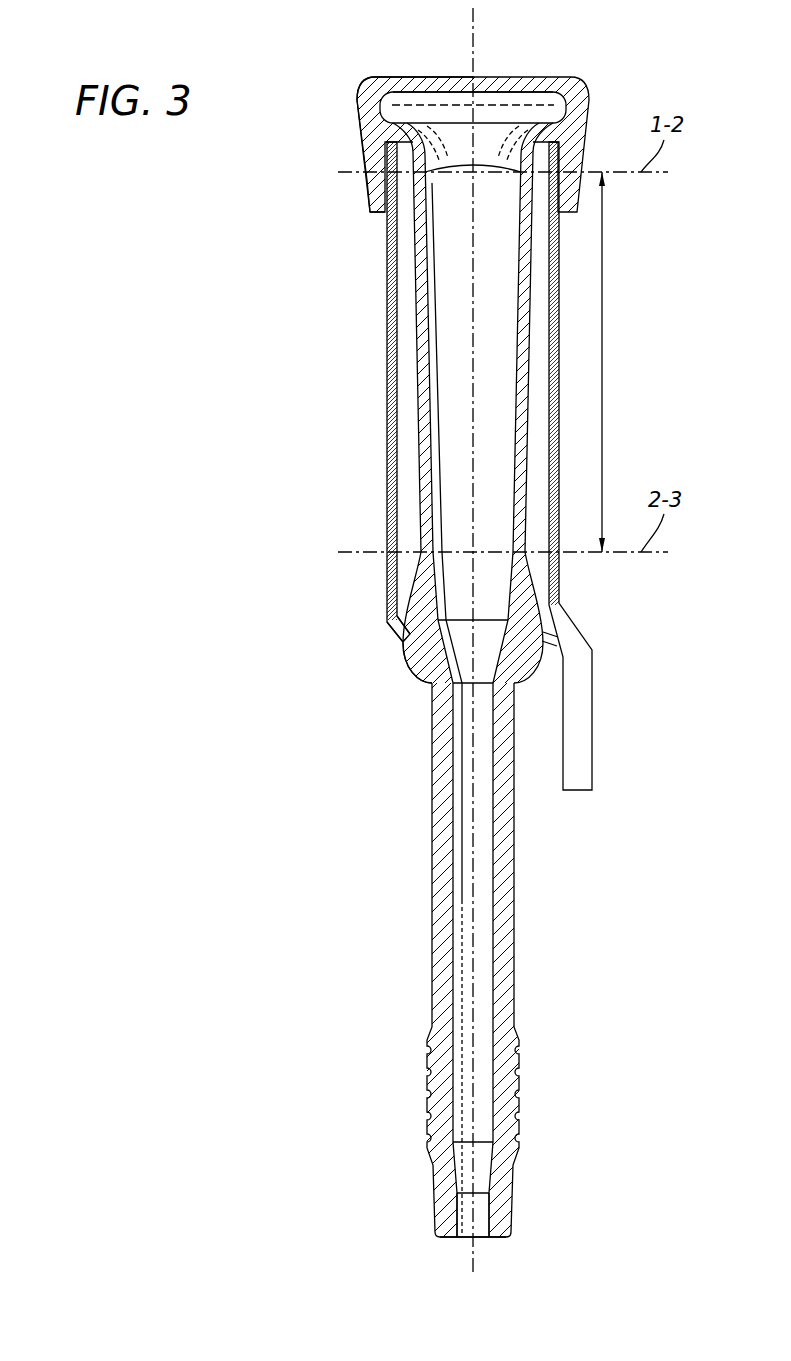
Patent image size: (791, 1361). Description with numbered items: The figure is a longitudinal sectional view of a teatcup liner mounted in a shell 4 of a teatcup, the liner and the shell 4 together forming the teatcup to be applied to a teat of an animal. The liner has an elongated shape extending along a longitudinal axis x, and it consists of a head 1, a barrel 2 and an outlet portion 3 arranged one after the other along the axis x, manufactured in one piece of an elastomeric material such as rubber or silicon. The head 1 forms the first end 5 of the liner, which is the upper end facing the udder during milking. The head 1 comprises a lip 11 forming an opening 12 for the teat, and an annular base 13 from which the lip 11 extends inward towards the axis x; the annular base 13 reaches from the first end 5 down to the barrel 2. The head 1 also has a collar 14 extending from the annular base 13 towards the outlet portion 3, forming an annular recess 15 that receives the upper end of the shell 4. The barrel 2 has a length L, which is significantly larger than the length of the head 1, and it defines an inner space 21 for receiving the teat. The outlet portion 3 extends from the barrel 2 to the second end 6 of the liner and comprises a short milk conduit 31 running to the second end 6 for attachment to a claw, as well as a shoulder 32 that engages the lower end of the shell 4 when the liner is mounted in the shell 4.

The head 1 is at (350, 100).
The barrel 2 is at (413, 362).
The outlet portion 3 is at (426, 783).
The shell 4 is at (386, 437).
The first end 5 is at (374, 76).
The second end 6 is at (450, 1237).
The lip 11 is at (413, 86).
The opening 12 is at (488, 86).
The annular base 13 is at (367, 108).
The collar 14 is at (365, 160).
The annular recess 15 is at (375, 198).
The inner space 21 is at (507, 391).
The short milk conduit 31 is at (440, 913).
The shoulder 32 is at (400, 642).
The longitudinal axis x is at (472, 860).
The length L is at (623, 362).